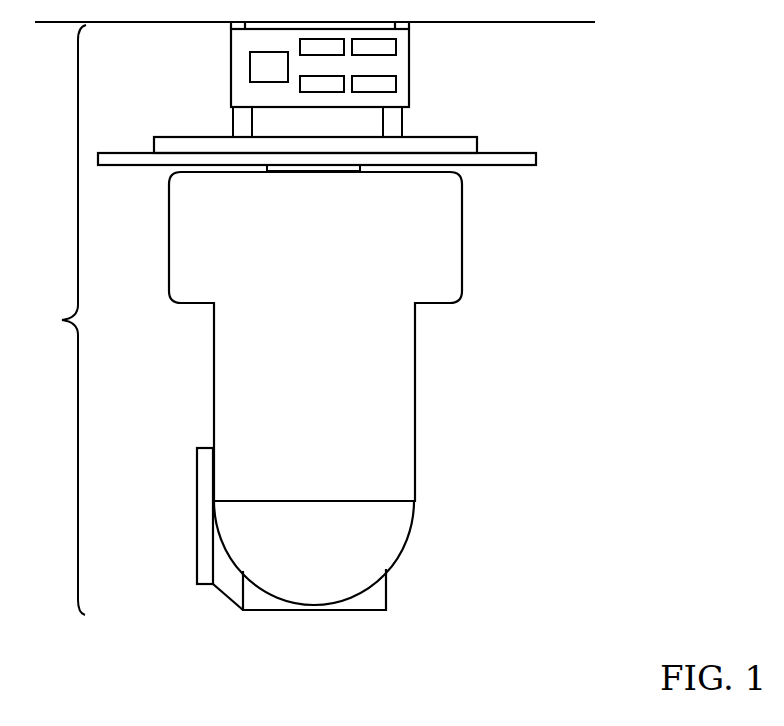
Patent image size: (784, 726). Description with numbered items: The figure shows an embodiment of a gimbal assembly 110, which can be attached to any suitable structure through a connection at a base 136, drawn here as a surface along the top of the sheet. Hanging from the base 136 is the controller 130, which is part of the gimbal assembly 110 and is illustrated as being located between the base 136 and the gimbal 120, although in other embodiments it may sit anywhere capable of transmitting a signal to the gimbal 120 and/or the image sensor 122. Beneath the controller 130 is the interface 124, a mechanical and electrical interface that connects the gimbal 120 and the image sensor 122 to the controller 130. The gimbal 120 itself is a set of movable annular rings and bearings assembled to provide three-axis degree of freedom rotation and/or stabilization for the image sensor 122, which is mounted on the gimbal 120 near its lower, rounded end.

The gimbal assembly 110 is at (51, 320).
The gimbal 120 is at (169, 237).
The image sensor 122 is at (197, 565).
The interface 124 is at (543, 115).
The controller 130 is at (231, 92).
The base 136 is at (580, 22).